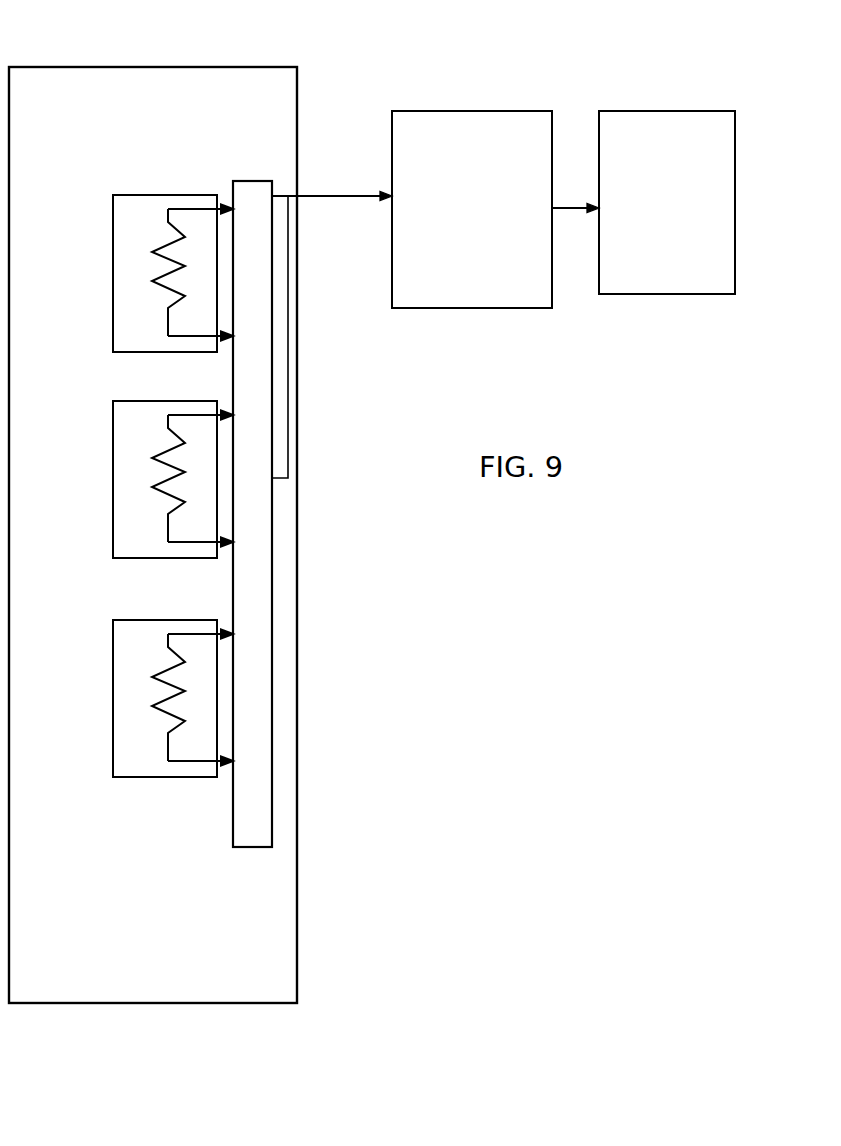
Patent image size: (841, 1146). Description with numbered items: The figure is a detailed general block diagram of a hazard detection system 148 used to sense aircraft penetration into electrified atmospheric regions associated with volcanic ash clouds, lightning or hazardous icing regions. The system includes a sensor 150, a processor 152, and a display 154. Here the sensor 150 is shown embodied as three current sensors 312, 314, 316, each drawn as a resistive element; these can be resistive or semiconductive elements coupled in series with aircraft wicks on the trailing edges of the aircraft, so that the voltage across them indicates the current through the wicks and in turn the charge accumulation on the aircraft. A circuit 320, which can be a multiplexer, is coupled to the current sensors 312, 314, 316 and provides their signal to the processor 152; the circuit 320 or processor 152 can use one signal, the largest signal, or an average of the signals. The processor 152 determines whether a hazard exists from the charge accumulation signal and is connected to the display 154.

The hazard detection system 148 is at (492, 559).
The sensor 150 is at (297, 706).
The processor 152 is at (392, 229).
The display 154 is at (599, 260).
The current sensor 312 is at (129, 195).
The current sensor 314 is at (129, 401).
The current sensor 316 is at (128, 620).
The circuit 320 is at (233, 810).